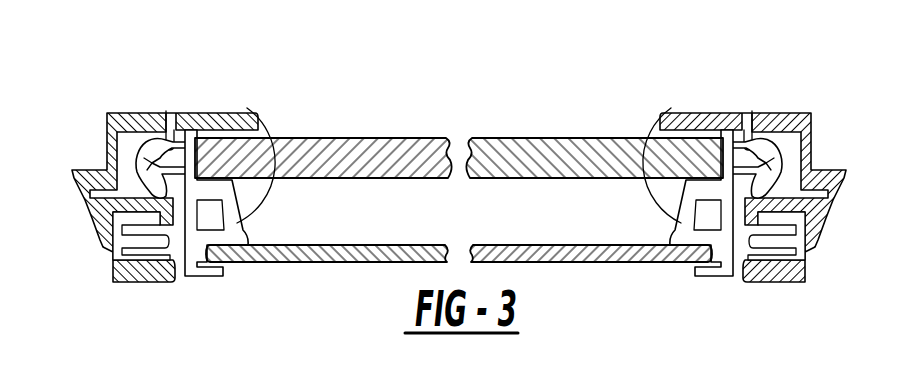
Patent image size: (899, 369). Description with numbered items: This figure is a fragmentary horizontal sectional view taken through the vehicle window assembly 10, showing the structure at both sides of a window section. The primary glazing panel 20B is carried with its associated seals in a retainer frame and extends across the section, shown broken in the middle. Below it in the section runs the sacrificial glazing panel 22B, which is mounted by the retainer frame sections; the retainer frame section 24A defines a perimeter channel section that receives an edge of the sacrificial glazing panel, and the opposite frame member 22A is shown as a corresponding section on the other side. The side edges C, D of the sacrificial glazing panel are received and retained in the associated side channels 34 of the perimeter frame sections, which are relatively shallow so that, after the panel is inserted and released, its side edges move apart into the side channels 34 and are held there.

The vehicle window assembly 10 is at (291, 58).
The sacrificial glazing panel 22A is at (157, 110).
The retainer frame section 24A is at (812, 109).
The primary glazing panel 20B is at (506, 138).
The sacrificial glazing panel 22B is at (577, 263).
The side channel 34 is at (233, 264).
The side edge C is at (185, 278).
The side edge D is at (715, 278).